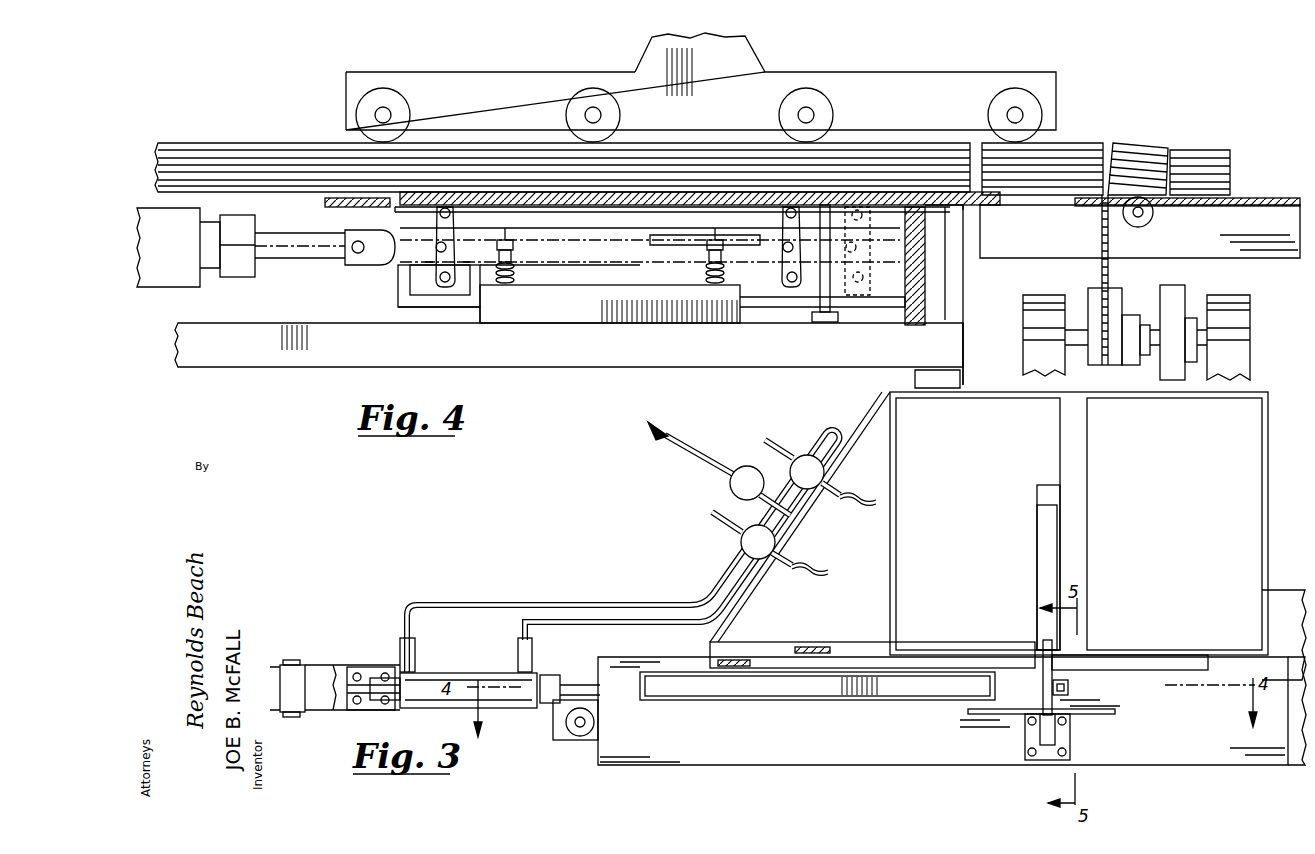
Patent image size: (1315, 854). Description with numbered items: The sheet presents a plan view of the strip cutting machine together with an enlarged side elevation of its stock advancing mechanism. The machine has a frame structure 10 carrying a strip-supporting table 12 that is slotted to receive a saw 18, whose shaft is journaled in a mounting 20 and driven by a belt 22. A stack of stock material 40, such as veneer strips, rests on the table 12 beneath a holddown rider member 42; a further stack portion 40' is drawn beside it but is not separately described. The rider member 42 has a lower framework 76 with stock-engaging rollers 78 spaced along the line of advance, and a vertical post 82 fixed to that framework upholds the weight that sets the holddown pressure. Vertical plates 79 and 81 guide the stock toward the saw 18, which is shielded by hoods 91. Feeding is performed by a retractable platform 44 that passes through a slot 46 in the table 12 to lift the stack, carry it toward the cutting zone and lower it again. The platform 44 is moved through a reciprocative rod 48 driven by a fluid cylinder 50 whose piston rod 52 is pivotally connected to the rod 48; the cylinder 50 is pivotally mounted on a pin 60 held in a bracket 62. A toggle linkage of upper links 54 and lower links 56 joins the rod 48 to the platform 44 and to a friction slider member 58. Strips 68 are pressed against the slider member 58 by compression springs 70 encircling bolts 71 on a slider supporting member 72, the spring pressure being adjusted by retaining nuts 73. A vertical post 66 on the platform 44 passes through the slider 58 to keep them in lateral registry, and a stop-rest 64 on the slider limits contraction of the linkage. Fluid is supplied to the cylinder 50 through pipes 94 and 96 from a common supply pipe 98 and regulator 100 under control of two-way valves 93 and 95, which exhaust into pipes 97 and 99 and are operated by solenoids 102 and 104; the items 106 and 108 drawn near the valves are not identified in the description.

In FIG. 4, the frame structure 10 is at (1276, 252).
In FIG. 3, the frame structure 10 is at (1270, 500).
In FIG. 4, the strip-supporting table 12 is at (340, 206).
In FIG. 3, the strip-supporting table 12 is at (667, 652).
In FIG. 4, the saw 18 is at (1110, 273).
In FIG. 4, the mounting 20 is at (1030, 358).
In FIG. 4, the belt 22 is at (1175, 298).
In FIG. 4, the stack of stock material 40 is at (629, 150).
In FIG. 4, the stack being tipped 40' is at (1169, 153).
In FIG. 4, the holddown rider member 42 is at (640, 62).
In FIG. 4, the retractable platform 44 is at (616, 210).
In FIG. 3, the retractable platform 44 is at (722, 698).
In FIG. 3, the slot 46 is at (635, 700).
In FIG. 4, the reciprocative rod 48 is at (693, 240).
In FIG. 4, the fluid cylinder 50 is at (163, 285).
In FIG. 3, the fluid cylinder 50 is at (518, 710).
In FIG. 4, the piston rod 52 is at (300, 259).
In FIG. 3, the piston rod 52 is at (575, 685).
In FIG. 4, the links 54 is at (450, 216).
In FIG. 4, the links 56 is at (450, 264).
In FIG. 4, the friction slider member 58 is at (405, 306).
In FIG. 3, the pin 60 is at (382, 678).
In FIG. 3, the bracket 62 is at (358, 685).
In FIG. 4, the stop-rest 64 is at (398, 280).
In FIG. 4, the vertical post 66 is at (828, 290).
In FIG. 4, the strips 68 is at (658, 297).
In FIG. 4, the loading compression springs 70 is at (516, 274).
In FIG. 4, the bolts 71 is at (512, 240).
In FIG. 4, the slider supporting member 72 is at (498, 326).
In FIG. 4, the spring retaining nuts 73 is at (514, 247).
In FIG. 4, the lower framework 76 is at (916, 74).
In FIG. 4, the stock-engaging rollers 78 is at (566, 106).
In FIG. 3, the vertical plates 79 is at (1008, 718).
In FIG. 3, the vertical plates 81 is at (858, 634).
In FIG. 3, the vertical post 82 is at (295, 672).
In FIG. 3, the hoods 91 is at (1037, 578).
In FIG. 3, the two-way control valve 93 is at (777, 543).
In FIG. 3, the pipe 94 is at (487, 605).
In FIG. 3, the two-way control valve 95 is at (815, 465).
In FIG. 3, the pipe 96 is at (525, 630).
In FIG. 3, the pipe 97 is at (712, 520).
In FIG. 3, the common supply pipe 98 is at (700, 455).
In FIG. 3, the pipe 99 is at (772, 438).
In FIG. 3, the regulator 100 is at (745, 466).
In FIG. 3, the solenoid 102 is at (795, 563).
In FIG. 3, the solenoid 104 is at (832, 497).
In FIG. 3, the hose 106 is at (808, 575).
In FIG. 3, the hose 108 is at (877, 500).